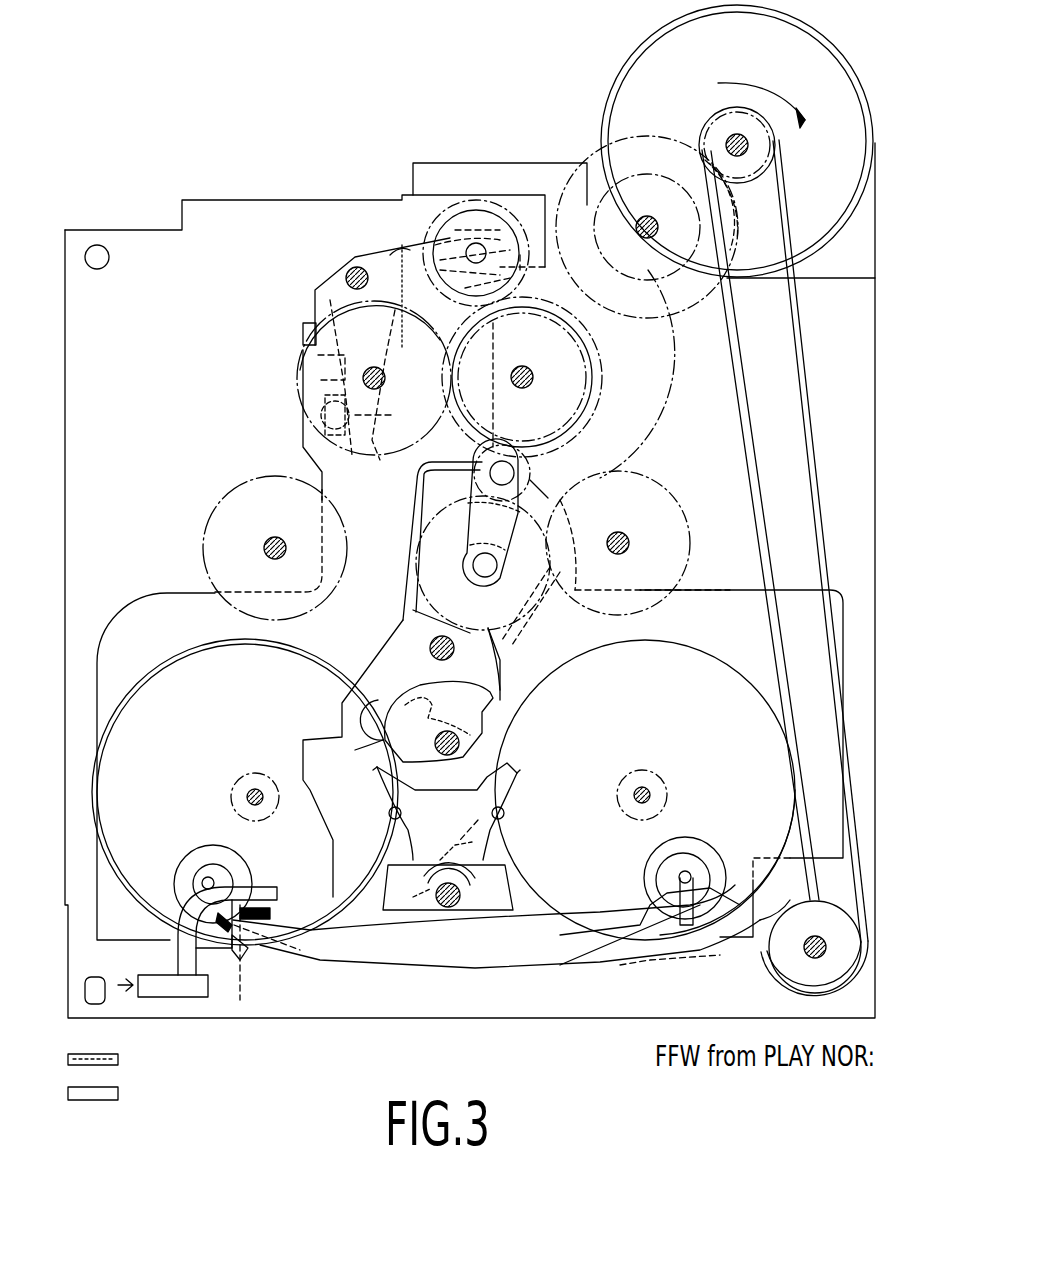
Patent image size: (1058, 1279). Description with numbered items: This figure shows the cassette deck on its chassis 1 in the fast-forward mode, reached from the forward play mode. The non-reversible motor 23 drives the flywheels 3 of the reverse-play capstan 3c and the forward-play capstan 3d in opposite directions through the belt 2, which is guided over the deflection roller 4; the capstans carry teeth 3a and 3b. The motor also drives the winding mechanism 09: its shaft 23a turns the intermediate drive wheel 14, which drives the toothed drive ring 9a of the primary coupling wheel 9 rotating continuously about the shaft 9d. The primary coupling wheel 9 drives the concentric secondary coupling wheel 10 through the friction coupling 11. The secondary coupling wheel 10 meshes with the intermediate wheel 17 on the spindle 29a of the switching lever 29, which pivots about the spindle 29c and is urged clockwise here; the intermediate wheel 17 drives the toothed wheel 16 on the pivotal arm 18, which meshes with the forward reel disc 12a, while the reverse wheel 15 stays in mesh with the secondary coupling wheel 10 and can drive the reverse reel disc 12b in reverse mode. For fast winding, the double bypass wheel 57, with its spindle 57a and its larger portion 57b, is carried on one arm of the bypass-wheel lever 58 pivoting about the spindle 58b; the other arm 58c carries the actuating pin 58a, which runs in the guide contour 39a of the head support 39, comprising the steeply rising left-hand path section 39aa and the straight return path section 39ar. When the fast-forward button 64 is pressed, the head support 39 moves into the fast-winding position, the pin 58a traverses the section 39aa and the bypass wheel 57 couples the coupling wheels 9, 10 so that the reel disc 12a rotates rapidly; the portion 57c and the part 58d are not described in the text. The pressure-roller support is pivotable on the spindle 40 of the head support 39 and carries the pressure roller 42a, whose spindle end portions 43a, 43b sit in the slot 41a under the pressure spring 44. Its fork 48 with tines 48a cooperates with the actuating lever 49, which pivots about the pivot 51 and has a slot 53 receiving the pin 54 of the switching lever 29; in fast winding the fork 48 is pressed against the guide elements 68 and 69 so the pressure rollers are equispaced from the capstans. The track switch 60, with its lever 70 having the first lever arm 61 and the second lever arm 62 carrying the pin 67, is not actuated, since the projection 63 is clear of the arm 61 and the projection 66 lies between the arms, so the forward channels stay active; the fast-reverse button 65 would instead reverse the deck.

The chassis 1 is at (215, 226).
The belt 2 is at (792, 326).
The flywheels 3 is at (706, 685).
The teeth 3a is at (634, 792).
The teeth 3b is at (245, 793).
The capstan 3c is at (270, 786).
The capstan 3d is at (655, 786).
The deflection roller 4 is at (820, 916).
The primary coupling wheel 9 is at (585, 427).
The toothed drive ring 9a is at (664, 401).
The shaft 9d is at (522, 366).
The secondary coupling wheel 10 is at (592, 341).
The friction coupling 11 is at (590, 401).
The forward reel disc 12a is at (681, 528).
The reverse reel disc 12b is at (205, 537).
The intermediate drive wheel 14 is at (647, 174).
The reverse wheel 15 is at (312, 322).
The toothed wheel 16 is at (533, 608).
The intermediate wheel 17 is at (533, 468).
The pivotal arm 18 is at (462, 552).
The motor 23 is at (828, 68).
The motor shaft 23a is at (722, 133).
The switching lever 29 is at (420, 500).
The spindle 29a is at (505, 460).
The spindle 29c is at (428, 642).
The head support 39 is at (147, 612).
The guide contour 39a is at (318, 370).
The left-hand path section 39aa is at (320, 412).
The return path section 39ar is at (380, 412).
The spindle 40 is at (462, 897).
The slot 41a is at (660, 955).
The pressure roller 42a is at (712, 865).
The end portion 43a is at (678, 875).
The end portion 43b is at (207, 876).
The pressure spring 44 is at (480, 978).
The fork 48 is at (497, 787).
The fork tines 48a is at (512, 770).
The actuating lever 49 is at (498, 680).
The pivot 51 is at (460, 744).
The slot 53 is at (372, 745).
The pin 54 is at (418, 707).
The bypass wheel 57 is at (435, 225).
The spindle 57a is at (448, 235).
The bypass wheel 57b is at (490, 225).
The gear portion 57c is at (487, 255).
The bypass-wheel lever 58 is at (332, 287).
The actuating pin 58a is at (350, 481).
The spindle 58b is at (357, 267).
The arm 58c is at (303, 335).
The lever portion 58d is at (390, 255).
The track switch 60 is at (196, 1000).
The first lever arm 61 is at (268, 892).
The second lever arm 62 is at (212, 945).
The projection 63 is at (240, 945).
The fast-forward button 64 is at (120, 1094).
The fast-reverse button 65 is at (120, 1061).
The projection 66 is at (272, 918).
The pin 67 is at (275, 945).
The guide element 68 is at (392, 819).
The guide element 69 is at (504, 818).
The lever 70 is at (190, 904).
The winding mechanism 09 is at (540, 118).